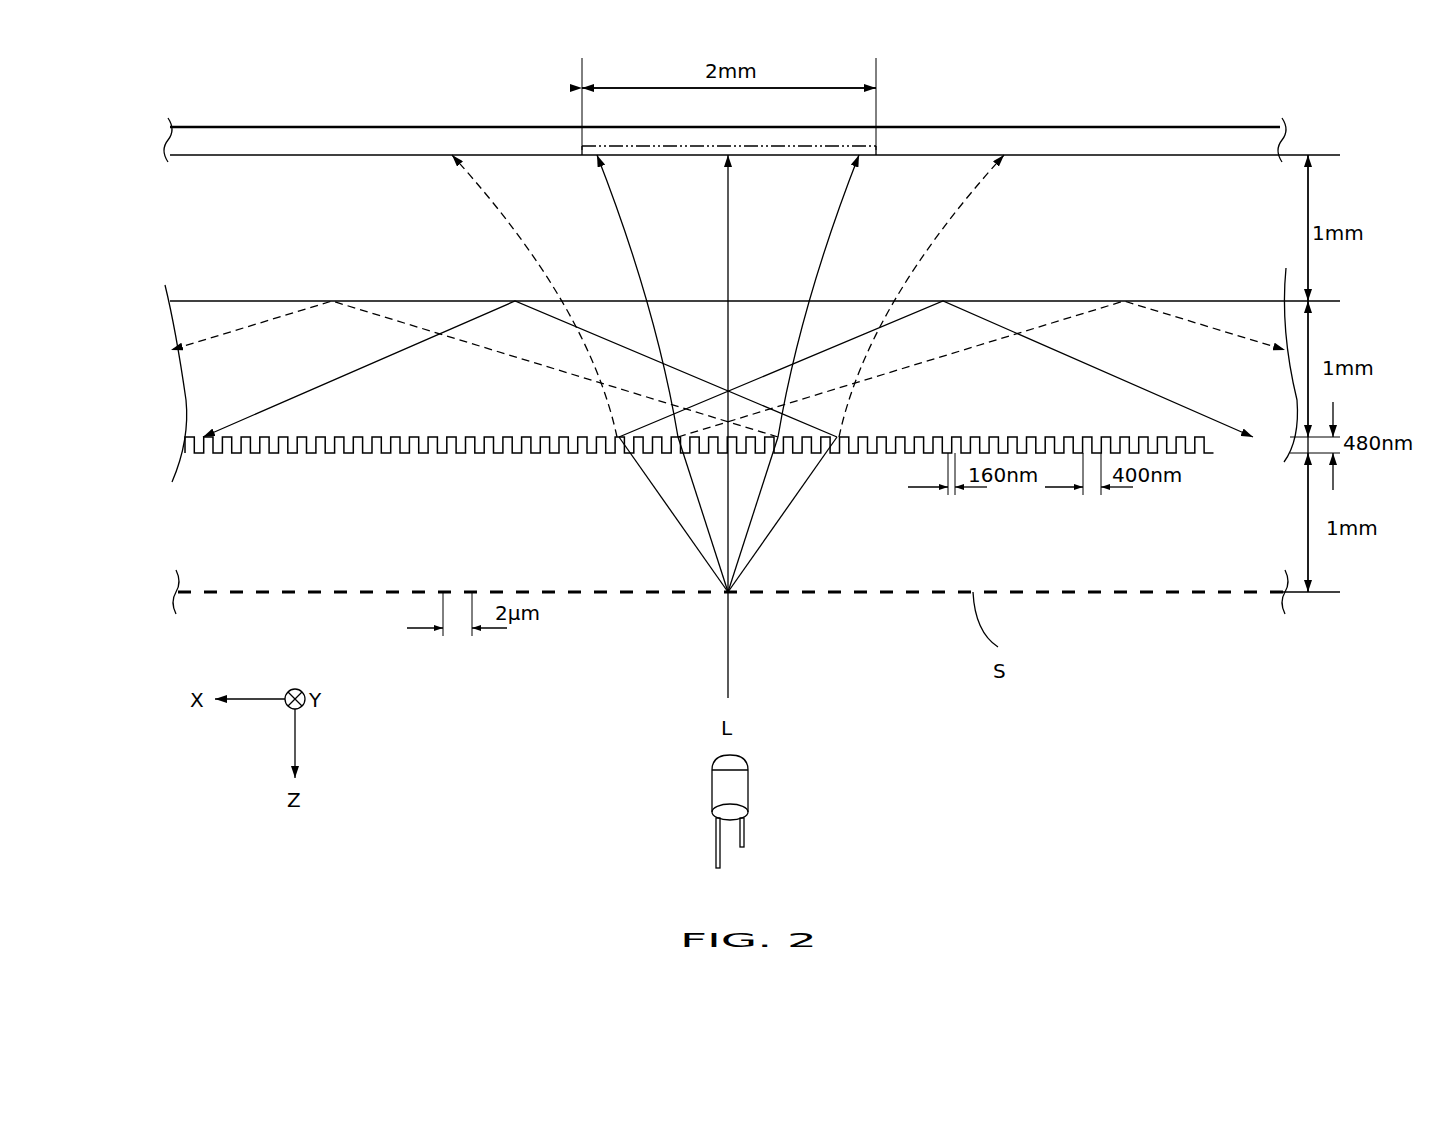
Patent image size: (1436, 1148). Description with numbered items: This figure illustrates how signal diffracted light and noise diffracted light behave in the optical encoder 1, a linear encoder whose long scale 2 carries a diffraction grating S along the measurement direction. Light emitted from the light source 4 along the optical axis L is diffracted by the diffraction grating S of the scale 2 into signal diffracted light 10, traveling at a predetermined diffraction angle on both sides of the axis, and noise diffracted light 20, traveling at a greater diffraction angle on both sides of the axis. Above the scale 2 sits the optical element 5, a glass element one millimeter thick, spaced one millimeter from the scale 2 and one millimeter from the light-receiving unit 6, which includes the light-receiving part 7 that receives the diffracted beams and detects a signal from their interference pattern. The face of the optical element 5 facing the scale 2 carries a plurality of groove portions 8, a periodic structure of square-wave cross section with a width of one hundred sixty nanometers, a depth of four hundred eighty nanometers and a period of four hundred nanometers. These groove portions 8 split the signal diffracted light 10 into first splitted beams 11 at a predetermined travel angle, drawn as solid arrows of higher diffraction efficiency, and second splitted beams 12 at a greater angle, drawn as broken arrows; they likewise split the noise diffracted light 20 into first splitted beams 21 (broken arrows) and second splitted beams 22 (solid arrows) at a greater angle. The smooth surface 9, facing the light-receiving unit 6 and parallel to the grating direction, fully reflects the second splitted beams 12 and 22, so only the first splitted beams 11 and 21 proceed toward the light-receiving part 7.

The optical encoder 1 is at (1109, 660).
The scale 2 is at (1172, 592).
The light source 4 is at (748, 792).
The optical element 5 is at (1160, 278).
The light-receiving unit 6 is at (1162, 127).
The light-receiving part 7 is at (877, 147).
The groove portions 8 is at (521, 460).
The smooth surface 9 is at (427, 300).
The signal diffracted light 10 is at (697, 507).
The first splitted beams 11 is at (620, 222).
The second splitted beams 12 is at (258, 325).
The noise diffracted light 20 is at (693, 542).
The first splitted beams 21 is at (503, 222).
The second splitted beams 22 is at (358, 372).